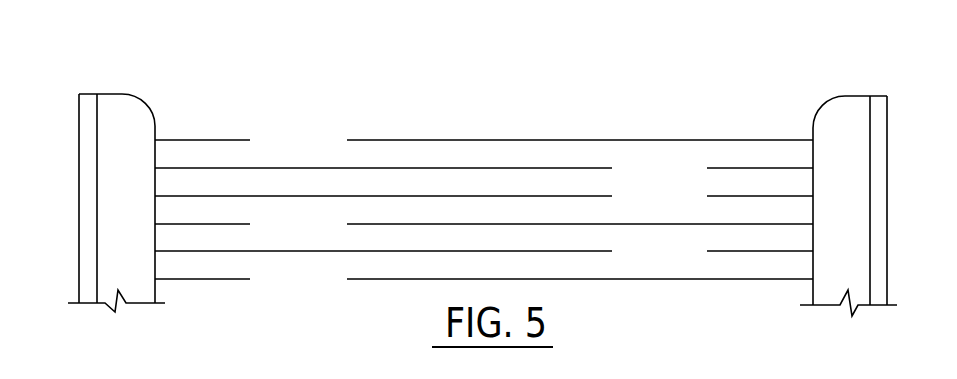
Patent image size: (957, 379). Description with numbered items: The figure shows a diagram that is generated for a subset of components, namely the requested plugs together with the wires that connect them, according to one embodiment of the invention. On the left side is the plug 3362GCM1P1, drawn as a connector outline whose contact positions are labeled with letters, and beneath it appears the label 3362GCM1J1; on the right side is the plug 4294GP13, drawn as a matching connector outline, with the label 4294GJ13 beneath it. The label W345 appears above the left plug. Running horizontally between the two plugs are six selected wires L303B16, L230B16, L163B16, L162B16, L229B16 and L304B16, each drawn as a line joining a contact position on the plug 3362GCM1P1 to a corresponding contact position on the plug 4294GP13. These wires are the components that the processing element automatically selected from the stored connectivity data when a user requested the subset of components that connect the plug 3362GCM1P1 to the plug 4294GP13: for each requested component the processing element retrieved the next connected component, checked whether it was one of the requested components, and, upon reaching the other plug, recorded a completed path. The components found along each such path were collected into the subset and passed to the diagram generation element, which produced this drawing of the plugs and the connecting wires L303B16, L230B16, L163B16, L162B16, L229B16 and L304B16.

The wire harness W345 is at (484, 166).
The plug 3362GCM1P1 is at (110, 185).
The left connector jack 3362GCM1J1 is at (114, 317).
The plug 4294GP13 is at (837, 187).
The right connector jack 4294GJ13 is at (847, 318).
The selected wire L303B16 is at (484, 140).
The selected wire L230B16 is at (484, 167).
The selected wire L163B16 is at (484, 197).
The selected wire L162B16 is at (484, 224).
The selected wire L229B16 is at (484, 252).
The selected wire L304B16 is at (484, 279).